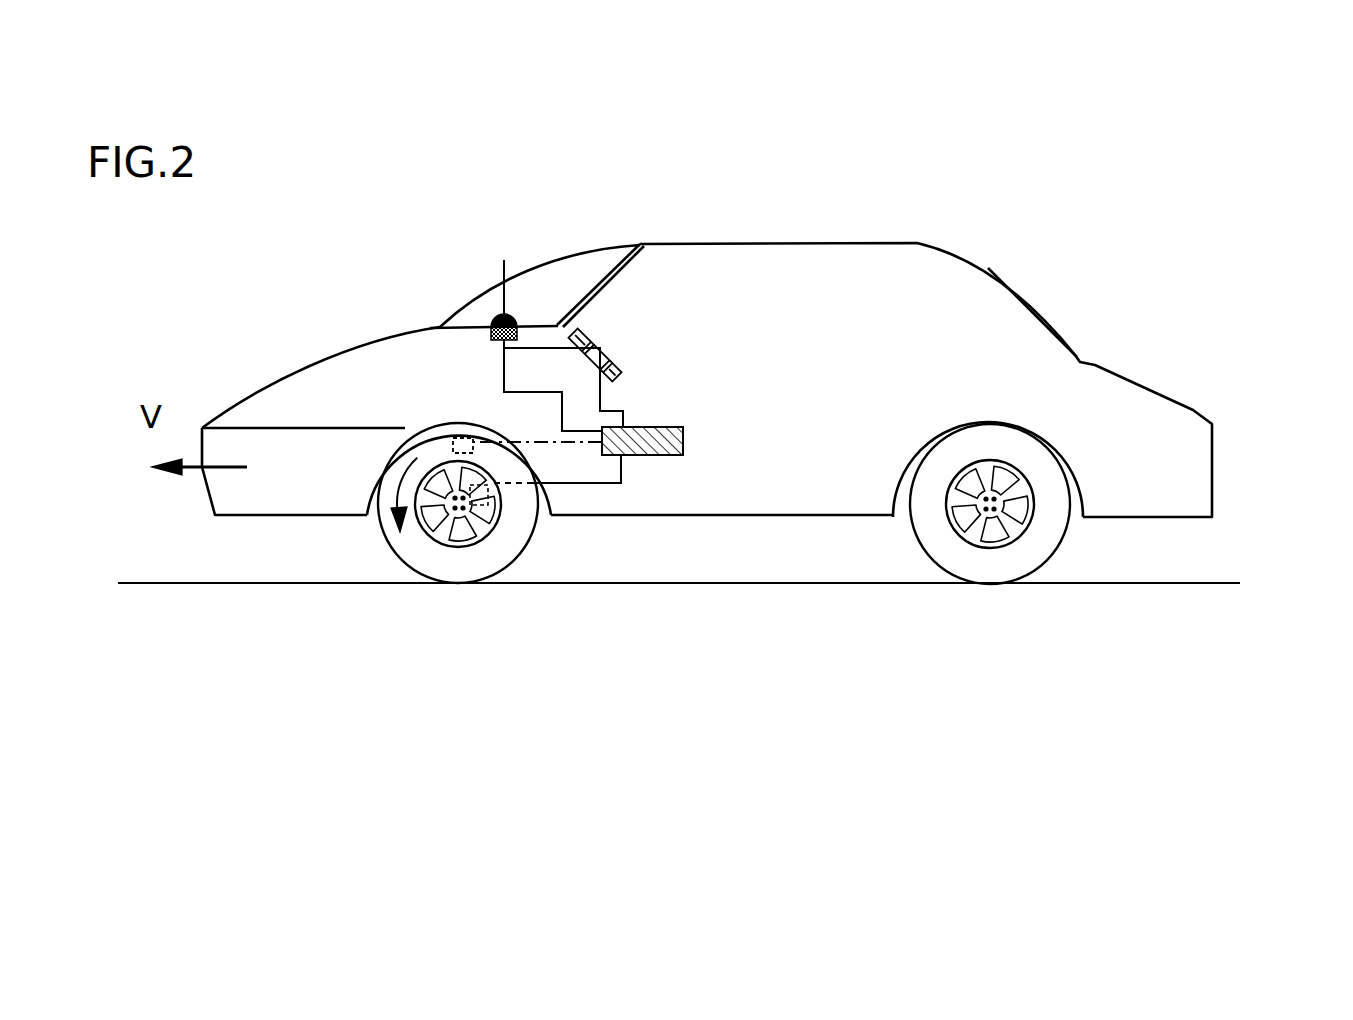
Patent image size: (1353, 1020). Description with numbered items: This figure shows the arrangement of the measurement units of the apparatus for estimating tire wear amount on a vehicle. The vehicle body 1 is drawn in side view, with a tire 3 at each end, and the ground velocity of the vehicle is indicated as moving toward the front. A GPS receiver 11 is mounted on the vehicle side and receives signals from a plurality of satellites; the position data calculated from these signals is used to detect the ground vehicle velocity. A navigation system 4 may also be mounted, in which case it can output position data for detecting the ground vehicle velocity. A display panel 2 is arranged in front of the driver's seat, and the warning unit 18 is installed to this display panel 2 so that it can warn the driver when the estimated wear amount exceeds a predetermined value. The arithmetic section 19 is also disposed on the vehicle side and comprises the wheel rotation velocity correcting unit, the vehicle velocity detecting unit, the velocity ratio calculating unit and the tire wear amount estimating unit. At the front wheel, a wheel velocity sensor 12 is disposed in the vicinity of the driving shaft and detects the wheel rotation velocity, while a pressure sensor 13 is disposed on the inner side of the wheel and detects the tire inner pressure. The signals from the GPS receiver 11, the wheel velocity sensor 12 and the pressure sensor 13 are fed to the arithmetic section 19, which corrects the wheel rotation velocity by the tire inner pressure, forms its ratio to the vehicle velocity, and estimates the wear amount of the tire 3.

The vehicle body 1 is at (392, 335).
The display panel 2 is at (572, 335).
The tire 3 is at (430, 450).
The navigation system 4 is at (558, 325).
The GPS receiver 11 is at (487, 327).
The wheel velocity sensor 12 is at (483, 535).
The pressure sensor 13 is at (480, 487).
The warning unit 18 is at (612, 365).
The arithmetic section 19 is at (683, 425).